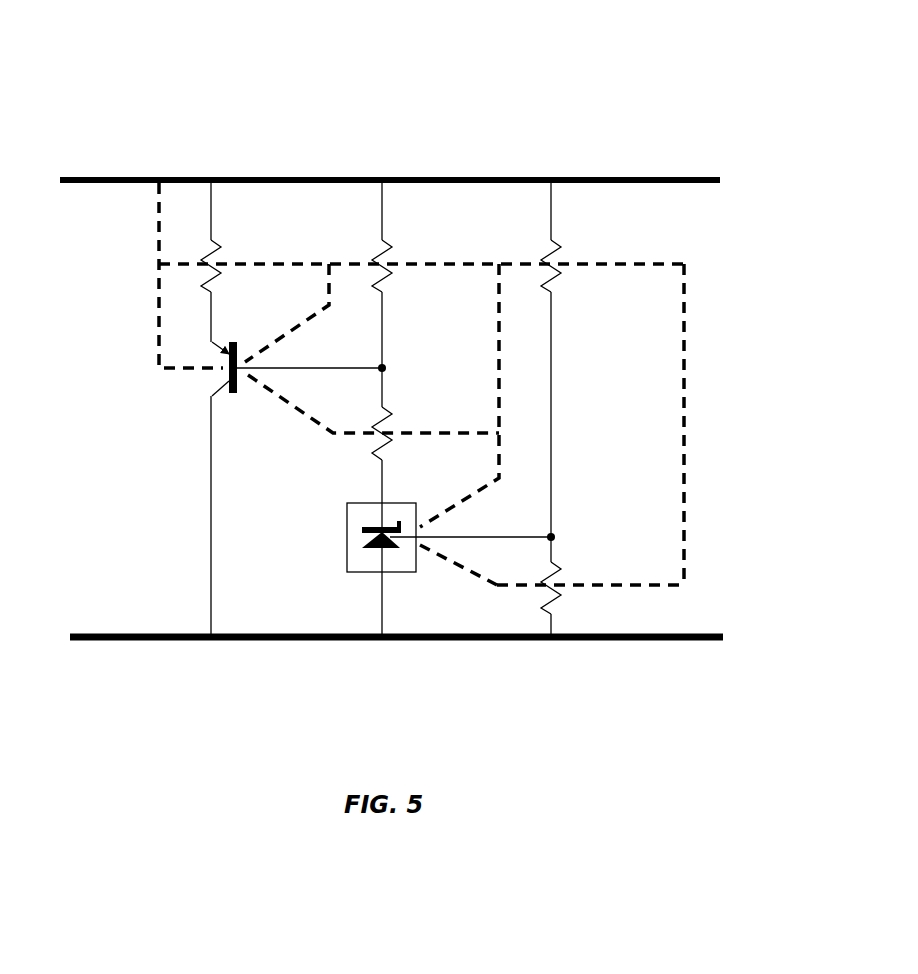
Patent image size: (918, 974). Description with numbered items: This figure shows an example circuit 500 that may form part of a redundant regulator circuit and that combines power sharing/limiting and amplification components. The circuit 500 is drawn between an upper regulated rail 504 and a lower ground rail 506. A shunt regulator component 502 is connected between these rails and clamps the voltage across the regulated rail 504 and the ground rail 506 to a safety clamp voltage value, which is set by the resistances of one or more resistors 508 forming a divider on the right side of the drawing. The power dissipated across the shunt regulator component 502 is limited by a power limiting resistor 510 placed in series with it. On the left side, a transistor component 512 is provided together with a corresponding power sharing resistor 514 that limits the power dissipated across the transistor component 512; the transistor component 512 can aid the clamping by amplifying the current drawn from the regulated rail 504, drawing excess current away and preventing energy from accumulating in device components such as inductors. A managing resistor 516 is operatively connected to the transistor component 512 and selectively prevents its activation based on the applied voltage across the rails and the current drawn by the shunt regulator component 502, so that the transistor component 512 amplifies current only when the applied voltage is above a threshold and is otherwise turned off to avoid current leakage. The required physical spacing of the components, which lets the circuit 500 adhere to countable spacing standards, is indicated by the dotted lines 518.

The circuit 500 is at (203, 50).
The shunt regulator component 502 is at (347, 550).
The regulated rail 504 is at (245, 178).
The ground rail 506 is at (697, 633).
The resistors 508 is at (549, 243).
The power limiting resistor 510 is at (375, 450).
The transistor component 512 is at (226, 355).
The power sharing resistor 514 is at (207, 288).
The managing resistor 516 is at (379, 243).
The dotted lines 518 is at (684, 392).